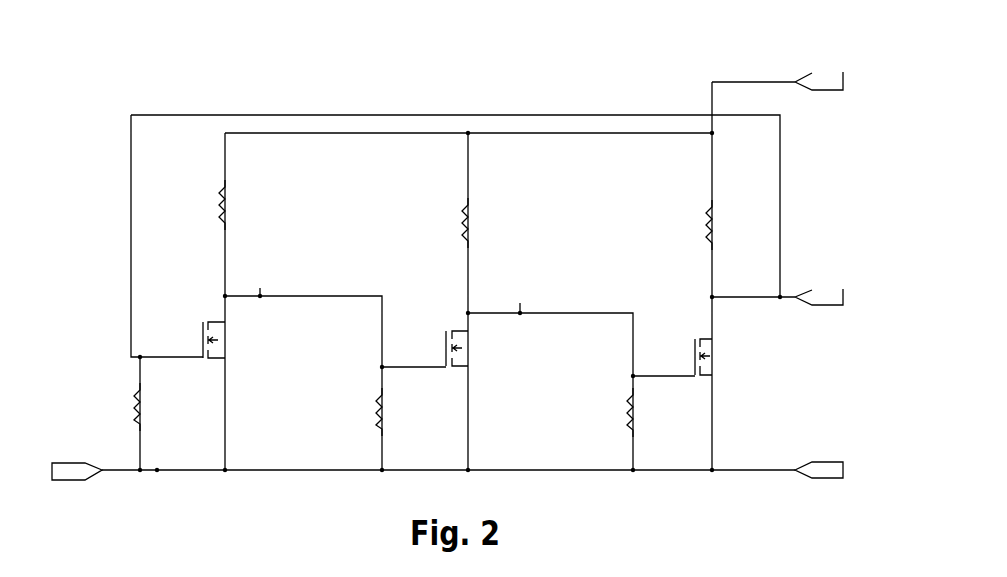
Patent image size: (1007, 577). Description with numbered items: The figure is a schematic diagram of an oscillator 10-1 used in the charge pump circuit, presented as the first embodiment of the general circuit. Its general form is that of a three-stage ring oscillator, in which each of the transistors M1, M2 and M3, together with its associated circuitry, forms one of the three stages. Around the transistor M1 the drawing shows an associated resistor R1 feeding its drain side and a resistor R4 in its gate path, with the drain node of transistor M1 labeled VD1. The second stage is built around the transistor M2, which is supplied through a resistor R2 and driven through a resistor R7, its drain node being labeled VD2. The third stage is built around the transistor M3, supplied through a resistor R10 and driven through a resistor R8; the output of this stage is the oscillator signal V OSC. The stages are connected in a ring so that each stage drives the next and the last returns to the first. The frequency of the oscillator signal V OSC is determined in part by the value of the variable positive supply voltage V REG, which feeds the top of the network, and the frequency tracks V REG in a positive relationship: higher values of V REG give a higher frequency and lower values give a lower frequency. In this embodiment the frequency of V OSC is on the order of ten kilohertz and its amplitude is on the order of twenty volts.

The oscillator 10-1 is at (454, 306).
The resistor R1 100K R1 is at (243, 205).
The resistor R2 100K R2 is at (486, 223).
The resistor R10 100K R10 is at (729, 225).
The resistor R4 10K R4 is at (153, 407).
The resistor R7 10K R7 is at (396, 412).
The resistor R8 10K R8 is at (647, 412).
The transistor M1 is at (253, 341).
The transistor M2 is at (496, 350).
The transistor M3 is at (741, 358).
The node VD1 is at (260, 281).
The node VD2 is at (520, 296).